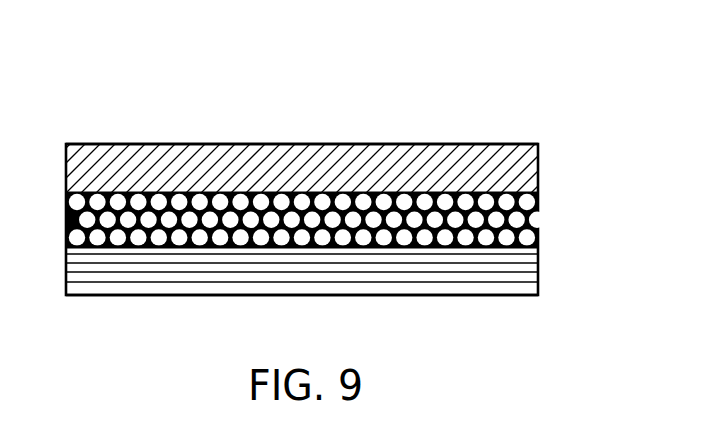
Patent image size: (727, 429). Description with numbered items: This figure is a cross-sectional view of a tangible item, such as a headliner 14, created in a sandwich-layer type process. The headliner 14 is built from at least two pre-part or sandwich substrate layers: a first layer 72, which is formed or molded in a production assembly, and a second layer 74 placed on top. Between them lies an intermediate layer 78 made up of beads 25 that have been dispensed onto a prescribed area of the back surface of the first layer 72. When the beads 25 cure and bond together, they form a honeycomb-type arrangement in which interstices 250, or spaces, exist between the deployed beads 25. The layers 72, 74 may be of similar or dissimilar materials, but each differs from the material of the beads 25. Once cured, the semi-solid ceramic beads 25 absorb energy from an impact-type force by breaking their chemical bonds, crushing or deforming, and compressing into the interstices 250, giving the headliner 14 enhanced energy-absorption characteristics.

The headliner 14 is at (333, 184).
The second pre-part layer 74 is at (131, 153).
The intermediate layer 78 is at (565, 194).
The interstices 250 is at (538, 218).
The beads 25 is at (353, 246).
The first pre-part layer 72 is at (117, 278).